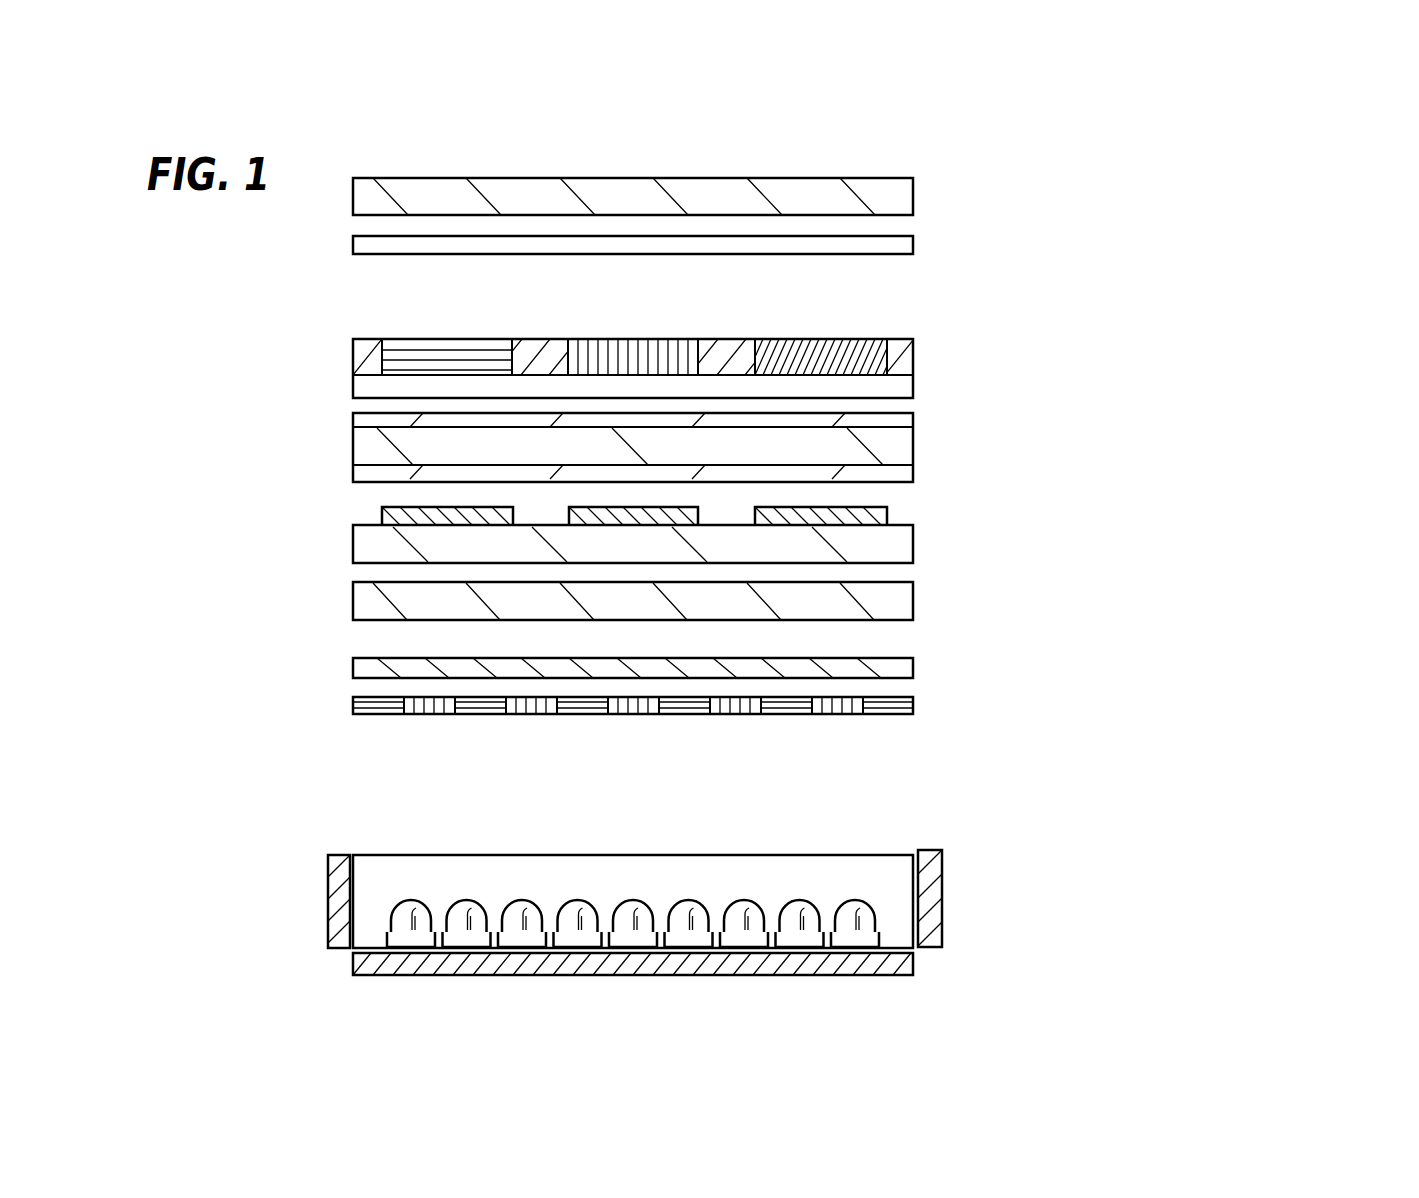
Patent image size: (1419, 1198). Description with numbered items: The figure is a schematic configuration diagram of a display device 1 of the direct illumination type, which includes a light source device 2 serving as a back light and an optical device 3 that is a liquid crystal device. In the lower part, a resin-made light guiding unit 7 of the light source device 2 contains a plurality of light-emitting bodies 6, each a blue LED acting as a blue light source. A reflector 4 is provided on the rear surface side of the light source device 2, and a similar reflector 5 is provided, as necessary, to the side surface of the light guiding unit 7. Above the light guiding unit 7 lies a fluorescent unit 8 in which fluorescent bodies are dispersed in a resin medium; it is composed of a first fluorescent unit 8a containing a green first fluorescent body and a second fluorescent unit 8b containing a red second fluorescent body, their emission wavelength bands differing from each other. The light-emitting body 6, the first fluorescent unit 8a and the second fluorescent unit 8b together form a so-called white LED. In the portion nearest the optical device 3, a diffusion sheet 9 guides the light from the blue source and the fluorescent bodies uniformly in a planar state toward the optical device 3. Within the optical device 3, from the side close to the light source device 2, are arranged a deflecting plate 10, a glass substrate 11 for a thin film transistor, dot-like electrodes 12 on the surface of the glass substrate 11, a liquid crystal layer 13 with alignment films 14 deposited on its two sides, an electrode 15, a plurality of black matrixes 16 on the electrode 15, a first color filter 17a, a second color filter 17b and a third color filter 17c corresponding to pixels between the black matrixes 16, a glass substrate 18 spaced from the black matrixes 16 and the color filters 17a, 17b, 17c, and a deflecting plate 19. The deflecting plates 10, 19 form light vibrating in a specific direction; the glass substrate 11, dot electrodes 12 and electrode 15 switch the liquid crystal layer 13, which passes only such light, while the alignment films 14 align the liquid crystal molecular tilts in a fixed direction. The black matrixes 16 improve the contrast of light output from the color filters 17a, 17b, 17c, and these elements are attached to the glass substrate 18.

The display device 1 is at (336, 176).
The light source device 2 is at (1087, 652).
The optical device 3 is at (1190, 165).
The reflector 4 is at (912, 966).
The reflector 5 is at (940, 912).
The light-emitting body 6 is at (583, 917).
The light guiding unit 7 is at (838, 893).
The fluorescent unit 8 is at (537, 771).
The first fluorescent unit 8a is at (375, 704).
The second fluorescent unit 8b is at (433, 705).
The diffusion sheet 9 is at (915, 663).
The deflecting plate 10 is at (907, 603).
The glass substrate for a TFT 11 is at (907, 549).
The dot-like electrodes 12 is at (857, 515).
The liquid crystal layer 13 is at (907, 448).
The alignment films 14 is at (907, 421).
The electrode 15 is at (907, 384).
The black matrixes 16 is at (907, 353).
The first color filter 17a is at (428, 348).
The second color filter 17b is at (653, 348).
The third color filter 17c is at (856, 348).
The glass substrate 18 is at (905, 246).
The deflecting plate 19 is at (905, 192).